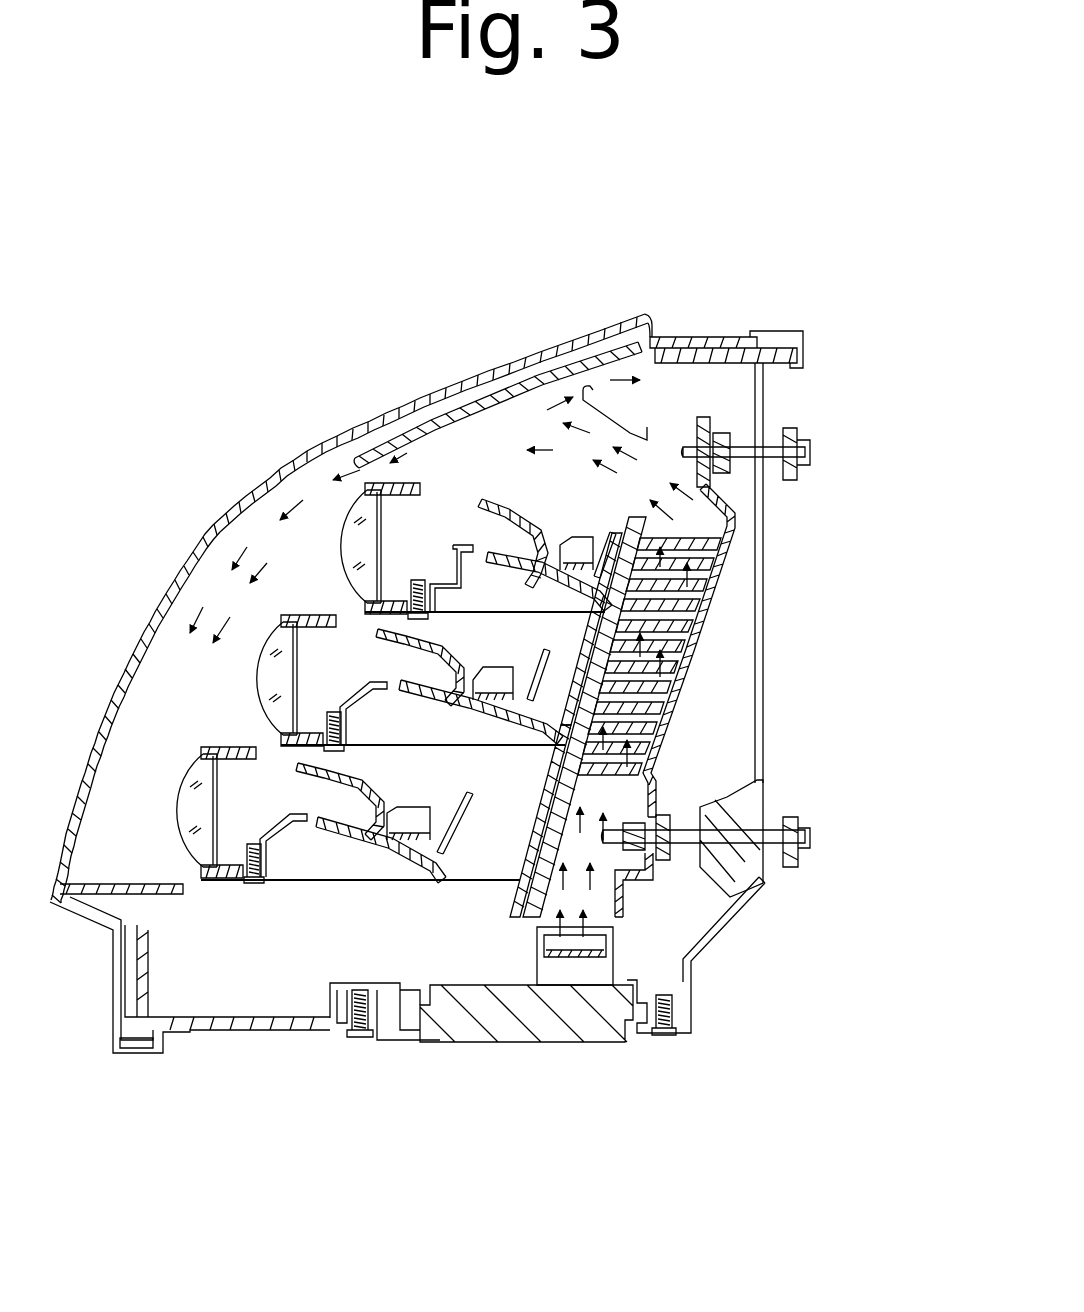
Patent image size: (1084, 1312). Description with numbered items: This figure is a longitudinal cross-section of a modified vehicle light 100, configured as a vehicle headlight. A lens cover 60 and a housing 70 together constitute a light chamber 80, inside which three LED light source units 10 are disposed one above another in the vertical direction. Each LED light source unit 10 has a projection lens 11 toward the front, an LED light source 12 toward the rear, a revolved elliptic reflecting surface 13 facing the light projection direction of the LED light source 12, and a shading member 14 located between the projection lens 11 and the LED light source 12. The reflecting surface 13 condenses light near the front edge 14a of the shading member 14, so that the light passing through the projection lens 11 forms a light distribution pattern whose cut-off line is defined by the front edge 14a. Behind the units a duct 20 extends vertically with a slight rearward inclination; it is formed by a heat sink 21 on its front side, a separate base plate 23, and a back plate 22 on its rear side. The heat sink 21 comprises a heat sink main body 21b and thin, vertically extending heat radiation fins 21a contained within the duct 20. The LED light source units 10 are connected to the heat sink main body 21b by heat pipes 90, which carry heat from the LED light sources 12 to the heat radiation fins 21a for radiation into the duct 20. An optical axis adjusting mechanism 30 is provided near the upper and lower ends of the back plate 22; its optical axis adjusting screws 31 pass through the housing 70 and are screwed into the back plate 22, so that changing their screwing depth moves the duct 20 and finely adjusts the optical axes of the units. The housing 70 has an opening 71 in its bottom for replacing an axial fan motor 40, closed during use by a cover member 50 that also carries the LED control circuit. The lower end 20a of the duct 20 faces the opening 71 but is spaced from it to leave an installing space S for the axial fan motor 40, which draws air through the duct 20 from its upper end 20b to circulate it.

The vehicle light 100 is at (405, 283).
The LED light source unit 10 is at (465, 502).
The projection lens 11 is at (352, 510).
The LED light source 12 is at (515, 586).
The reflecting surface 13 is at (507, 520).
The shading member 14 is at (438, 543).
The front edge 14a is at (453, 546).
The duct 20 is at (887, 527).
The lower end 20a is at (627, 910).
The upper end 20b is at (690, 500).
The heat sink 21 is at (833, 530).
The heat radiation fins 21a is at (632, 618).
The heat sink main body 21b is at (615, 560).
The back plate 22 is at (668, 720).
The separate base plate 23 is at (518, 885).
The optical axis adjusting mechanism 30 is at (815, 440).
The optical axis adjusting screw 31 is at (810, 452).
The axial fan motor 40 is at (537, 940).
The cover member 50 is at (522, 1043).
The lens cover 60 is at (232, 506).
The housing 70 is at (732, 925).
The opening 71 is at (393, 1003).
The light chamber 80 is at (287, 981).
The heat pipes 90 is at (548, 593).
The installing space S is at (630, 950).